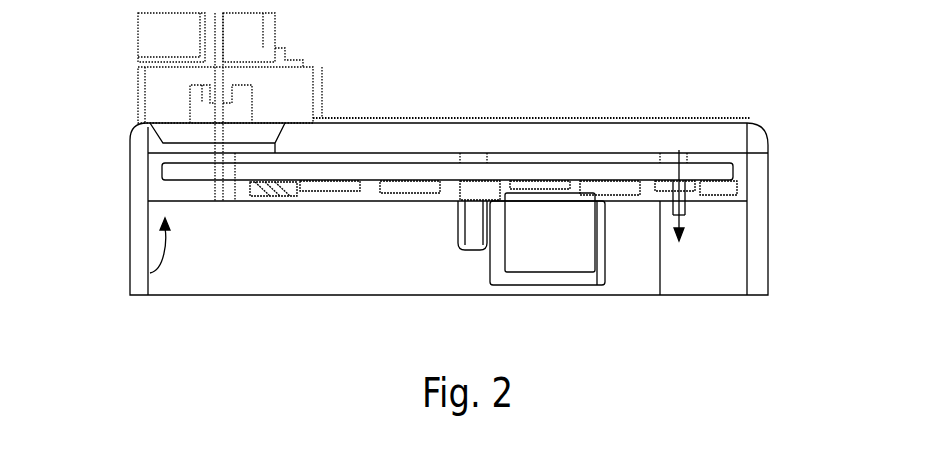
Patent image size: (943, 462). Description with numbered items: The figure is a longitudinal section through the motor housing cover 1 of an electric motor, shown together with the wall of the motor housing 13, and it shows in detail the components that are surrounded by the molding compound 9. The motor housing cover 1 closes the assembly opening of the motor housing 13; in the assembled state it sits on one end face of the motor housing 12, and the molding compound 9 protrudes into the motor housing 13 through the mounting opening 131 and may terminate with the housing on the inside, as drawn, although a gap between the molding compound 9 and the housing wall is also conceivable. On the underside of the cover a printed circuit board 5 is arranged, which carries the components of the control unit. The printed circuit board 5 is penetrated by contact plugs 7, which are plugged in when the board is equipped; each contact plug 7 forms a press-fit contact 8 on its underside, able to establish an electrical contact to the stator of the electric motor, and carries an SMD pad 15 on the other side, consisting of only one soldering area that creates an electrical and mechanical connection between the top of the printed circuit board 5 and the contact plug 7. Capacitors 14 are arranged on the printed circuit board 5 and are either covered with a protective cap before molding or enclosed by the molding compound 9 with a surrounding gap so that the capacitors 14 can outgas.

The motor housing cover 1 is at (768, 131).
The printed circuit board 5 is at (737, 188).
The contact plug 7 is at (761, 254).
The press-fit contact 8 is at (685, 222).
The molding compound 9 is at (747, 173).
The end face of the motor housing 12 is at (760, 153).
The motor housing 13 is at (760, 228).
The capacitor 14 is at (555, 255).
The SMD pad 15 is at (673, 150).
The mounting opening 131 is at (150, 273).